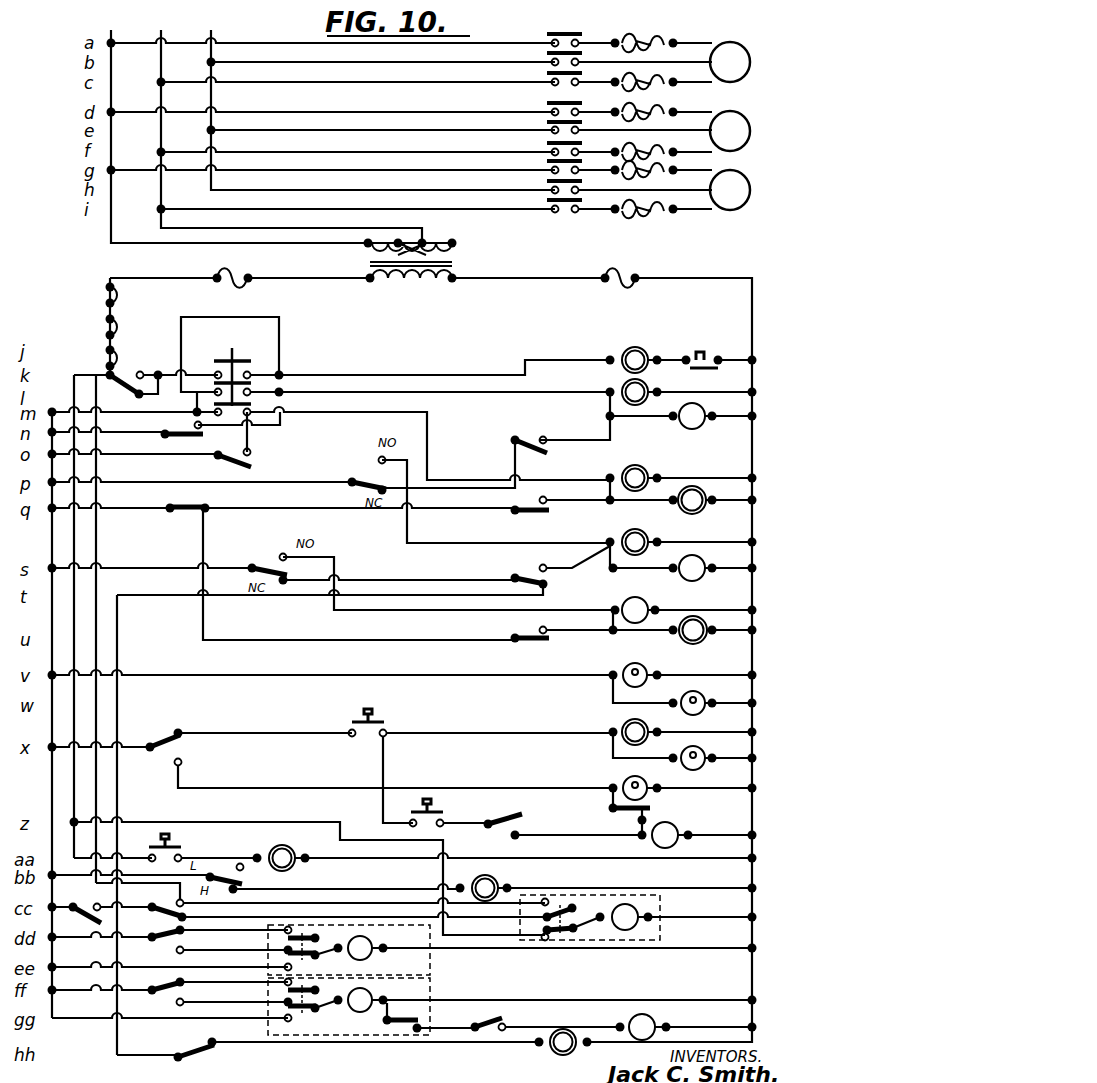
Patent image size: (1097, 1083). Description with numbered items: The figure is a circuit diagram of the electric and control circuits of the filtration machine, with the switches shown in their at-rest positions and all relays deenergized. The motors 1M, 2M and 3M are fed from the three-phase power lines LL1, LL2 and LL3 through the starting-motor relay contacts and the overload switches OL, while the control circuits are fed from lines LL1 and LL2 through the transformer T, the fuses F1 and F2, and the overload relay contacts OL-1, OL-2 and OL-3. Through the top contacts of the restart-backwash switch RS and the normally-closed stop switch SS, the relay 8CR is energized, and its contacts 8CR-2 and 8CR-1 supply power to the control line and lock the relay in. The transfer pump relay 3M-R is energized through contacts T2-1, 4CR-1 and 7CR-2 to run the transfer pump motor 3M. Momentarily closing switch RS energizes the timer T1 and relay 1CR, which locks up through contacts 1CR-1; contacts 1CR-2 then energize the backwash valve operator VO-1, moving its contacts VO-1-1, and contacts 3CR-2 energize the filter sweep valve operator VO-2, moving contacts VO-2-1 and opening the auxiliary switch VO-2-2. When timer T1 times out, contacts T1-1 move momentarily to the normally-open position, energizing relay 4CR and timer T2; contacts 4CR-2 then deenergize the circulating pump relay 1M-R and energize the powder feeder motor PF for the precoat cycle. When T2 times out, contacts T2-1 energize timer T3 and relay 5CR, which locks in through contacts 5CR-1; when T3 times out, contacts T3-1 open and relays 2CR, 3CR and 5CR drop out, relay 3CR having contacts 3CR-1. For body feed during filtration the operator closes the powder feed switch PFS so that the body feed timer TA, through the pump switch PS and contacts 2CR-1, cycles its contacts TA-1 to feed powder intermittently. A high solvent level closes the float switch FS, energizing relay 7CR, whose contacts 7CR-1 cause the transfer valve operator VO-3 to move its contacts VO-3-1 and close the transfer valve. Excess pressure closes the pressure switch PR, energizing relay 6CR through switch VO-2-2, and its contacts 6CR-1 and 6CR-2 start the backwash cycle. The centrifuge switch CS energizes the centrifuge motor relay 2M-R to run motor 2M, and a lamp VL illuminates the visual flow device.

The power line LL1 is at (111, 22).
The power line LL2 is at (161, 22).
The power line LL3 is at (211, 22).
The overload switches OL is at (646, 33).
The circulating pump motor 1M is at (730, 62).
The centrifuge motor 2M is at (730, 131).
The transfer pump motor 3M is at (730, 190).
The transformer T is at (458, 255).
The fuse F1 is at (242, 268).
The fuse F2 is at (630, 268).
The overload relay contact OL-1 is at (100, 295).
The overload relay contact OL-2 is at (100, 326).
The overload relay contact OL-3 is at (112, 354).
The relay contacts 8CR-2 is at (124, 388).
The restart-backwash switch RS is at (232, 354).
The relay 8CR is at (635, 351).
The stop switch SS is at (704, 357).
The relay 1CR is at (624, 388).
The timer T1 is at (648, 416).
The relay contacts 1CR-1 is at (544, 440).
The relay contacts 6CR-1 is at (194, 434).
The relay contacts 6CR-2 is at (230, 466).
The timer contacts T1-1 is at (356, 480).
The timer contacts T3-1 is at (190, 510).
The relay contacts 3CR-1 is at (530, 514).
The relay 2CR is at (636, 468).
The relay 3CR is at (700, 518).
The relay 4CR is at (636, 534).
The timer T2 is at (713, 568).
The timer contacts T2-1 is at (274, 562).
The relay contacts 4CR-1 is at (524, 575).
The timer T3 is at (683, 616).
The relay contacts 5CR-1 is at (530, 644).
The relay 5CR is at (692, 637).
The lamp VL is at (635, 665).
The relay contacts 4CR-2 is at (168, 735).
The pump switch PS is at (380, 722).
The pump relay 1M-R is at (626, 728).
The powder feeder motor PF is at (683, 792).
The body feed timer contacts TA-1 is at (664, 808).
The body feed timer TA is at (636, 835).
The powder feed switch PFS is at (448, 802).
The relay contacts 2CR-1 is at (522, 820).
The centrifuge switch CS is at (152, 842).
The centrifuge motor relay 2M-R is at (272, 853).
The float switch FS is at (242, 878).
The relay 7CR is at (488, 884).
The relay contacts 7CR-1 is at (168, 906).
The relay contacts 8CR-1 is at (82, 914).
The valve operator contacts VO-3-1 is at (573, 940).
The transfer valve operator VO-3 is at (636, 910).
The relay contacts 1CR-2 is at (168, 936).
The valve operator contacts VO-1-1 is at (300, 933).
The backwash valve operator VO-1 is at (374, 940).
The relay contacts 3CR-2 is at (168, 990).
The valve operator contacts VO-2-1 is at (302, 1030).
The filter sweep valve operator VO-2 is at (374, 992).
The auxiliary switch VO-2-2 is at (400, 1032).
The pressure switch PR is at (500, 1020).
The relay 6CR is at (652, 1022).
The relay contacts 7CR-2 is at (192, 1050).
The transfer pump relay 3M-R is at (558, 1052).